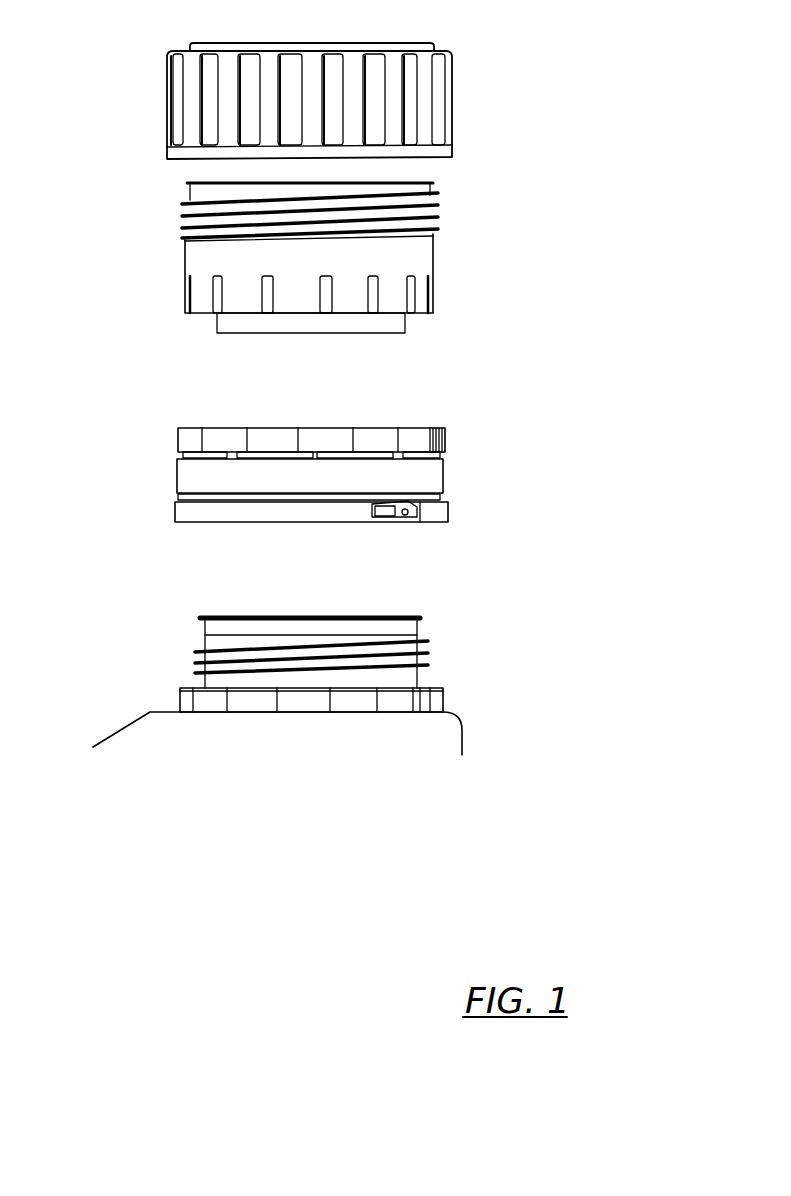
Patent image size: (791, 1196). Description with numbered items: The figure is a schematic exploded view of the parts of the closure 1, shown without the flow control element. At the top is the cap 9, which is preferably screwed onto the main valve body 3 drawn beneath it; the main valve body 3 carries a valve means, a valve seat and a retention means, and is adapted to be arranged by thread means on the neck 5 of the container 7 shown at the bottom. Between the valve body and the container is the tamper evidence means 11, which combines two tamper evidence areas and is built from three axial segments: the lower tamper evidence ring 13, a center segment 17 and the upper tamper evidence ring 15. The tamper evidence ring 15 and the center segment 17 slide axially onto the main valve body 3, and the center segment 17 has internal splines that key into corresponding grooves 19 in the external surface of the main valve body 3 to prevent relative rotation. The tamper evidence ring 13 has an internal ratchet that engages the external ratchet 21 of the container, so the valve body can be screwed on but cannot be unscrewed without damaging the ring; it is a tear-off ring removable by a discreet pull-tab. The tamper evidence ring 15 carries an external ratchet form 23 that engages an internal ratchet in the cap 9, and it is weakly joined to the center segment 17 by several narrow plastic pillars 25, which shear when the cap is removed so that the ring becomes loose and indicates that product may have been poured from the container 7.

The closure 1 is at (541, 141).
The main valve body 3 is at (352, 279).
The neck 5 is at (420, 635).
The container 7 is at (310, 673).
The cap 9 is at (455, 77).
The tamper evidence means 11 is at (309, 464).
The tamper evidence ring 13 is at (174, 502).
The tamper evidence ring 15 is at (295, 403).
The center segment 17 is at (202, 475).
The grooves 19 is at (325, 302).
The external ratchet 21 is at (442, 702).
The external ratchet form 23 is at (363, 443).
The narrow plastic pillars 25 is at (230, 455).